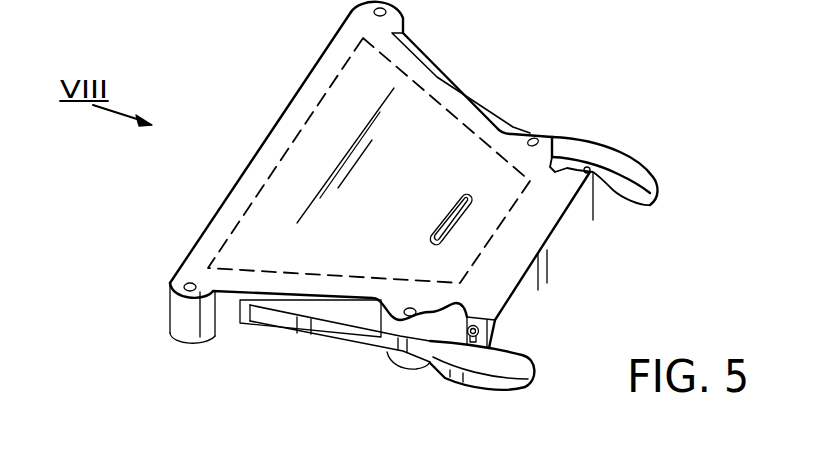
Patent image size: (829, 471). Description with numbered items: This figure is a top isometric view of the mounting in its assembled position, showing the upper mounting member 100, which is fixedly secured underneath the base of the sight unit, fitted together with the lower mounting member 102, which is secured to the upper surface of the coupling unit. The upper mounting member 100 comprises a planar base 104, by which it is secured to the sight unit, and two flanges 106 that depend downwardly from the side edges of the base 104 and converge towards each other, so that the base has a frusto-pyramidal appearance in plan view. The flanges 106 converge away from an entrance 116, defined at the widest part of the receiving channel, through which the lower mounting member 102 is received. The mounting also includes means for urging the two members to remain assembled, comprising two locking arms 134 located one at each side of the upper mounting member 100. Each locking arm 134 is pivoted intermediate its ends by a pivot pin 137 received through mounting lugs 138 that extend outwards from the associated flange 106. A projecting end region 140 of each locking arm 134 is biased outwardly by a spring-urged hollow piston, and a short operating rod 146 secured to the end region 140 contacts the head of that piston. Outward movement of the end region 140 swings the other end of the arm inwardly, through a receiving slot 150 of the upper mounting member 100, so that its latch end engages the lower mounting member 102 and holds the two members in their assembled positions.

The upper mounting member 100 is at (315, 65).
The lower mounting member 102 is at (262, 164).
The planar base 104 is at (418, 115).
The flanges 106 is at (228, 316).
The entrance 116 is at (288, 110).
The locking arms 134 is at (493, 113).
The pivot pin 137 is at (532, 135).
The mounting lugs 138 is at (535, 133).
The projecting end region 140 is at (657, 180).
The operating rod 146 is at (626, 203).
The receiving slot 150 is at (243, 323).